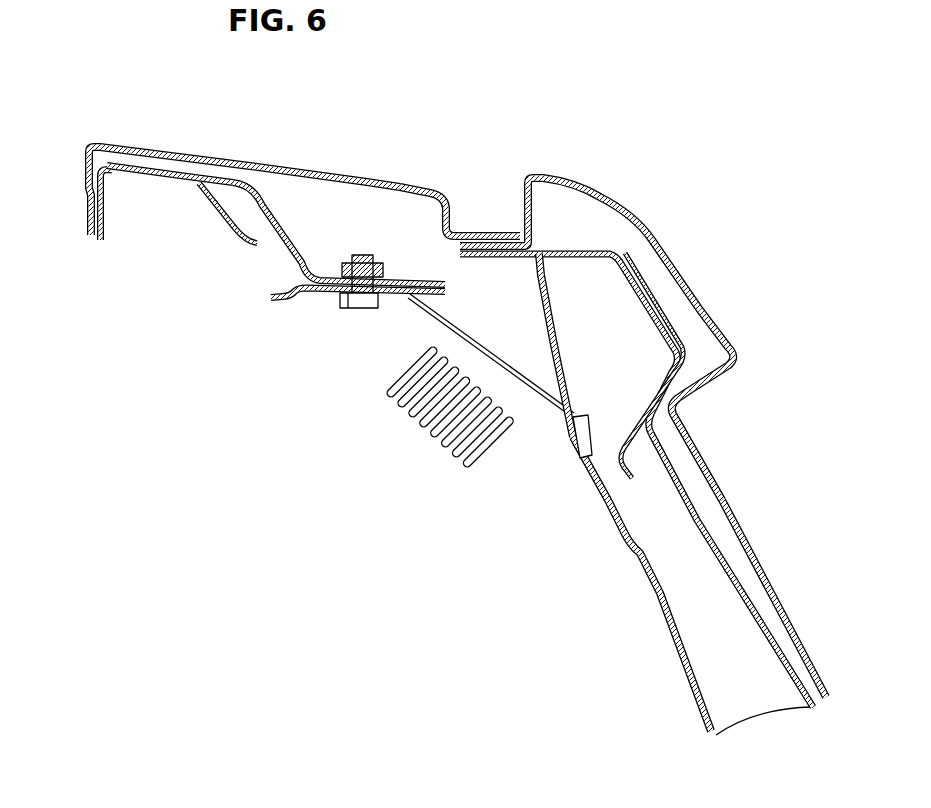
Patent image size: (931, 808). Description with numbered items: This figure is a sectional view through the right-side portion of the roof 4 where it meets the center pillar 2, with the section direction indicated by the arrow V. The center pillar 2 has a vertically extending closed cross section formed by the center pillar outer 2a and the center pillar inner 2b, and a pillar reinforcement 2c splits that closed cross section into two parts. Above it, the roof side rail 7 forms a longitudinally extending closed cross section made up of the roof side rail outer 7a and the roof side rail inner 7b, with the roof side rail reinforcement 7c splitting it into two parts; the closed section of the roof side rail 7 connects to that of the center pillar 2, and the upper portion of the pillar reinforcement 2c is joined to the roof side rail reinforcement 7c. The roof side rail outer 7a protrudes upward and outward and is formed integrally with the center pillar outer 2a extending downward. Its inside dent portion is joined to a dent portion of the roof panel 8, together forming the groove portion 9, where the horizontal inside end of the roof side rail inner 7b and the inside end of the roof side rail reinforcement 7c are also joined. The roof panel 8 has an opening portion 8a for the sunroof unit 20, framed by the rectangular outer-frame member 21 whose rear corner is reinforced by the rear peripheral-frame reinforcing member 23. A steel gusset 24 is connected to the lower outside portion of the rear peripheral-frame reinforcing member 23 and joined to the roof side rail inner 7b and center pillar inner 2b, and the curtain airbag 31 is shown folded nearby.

The center pillar 2 is at (707, 457).
The center pillar outer 2a is at (774, 584).
The center pillar inner 2b is at (678, 650).
The pillar reinforcement 2c is at (770, 632).
The roof 4 is at (151, 145).
The roof side rail 7 is at (606, 186).
The roof side rail outer 7a is at (708, 302).
The roof side rail inner 7b is at (540, 306).
The roof side rail reinforcement 7c is at (636, 412).
The roof panel 8 is at (367, 176).
The opening portion 8a is at (80, 161).
The groove portion 9 is at (455, 212).
The sunroof unit 20 is at (232, 250).
The outer-frame member 21 is at (150, 177).
The rear peripheral-frame reinforcing member 23 is at (290, 222).
The gusset 24 is at (302, 298).
The airbag 31 is at (450, 468).
The viewing direction V is at (594, 114).